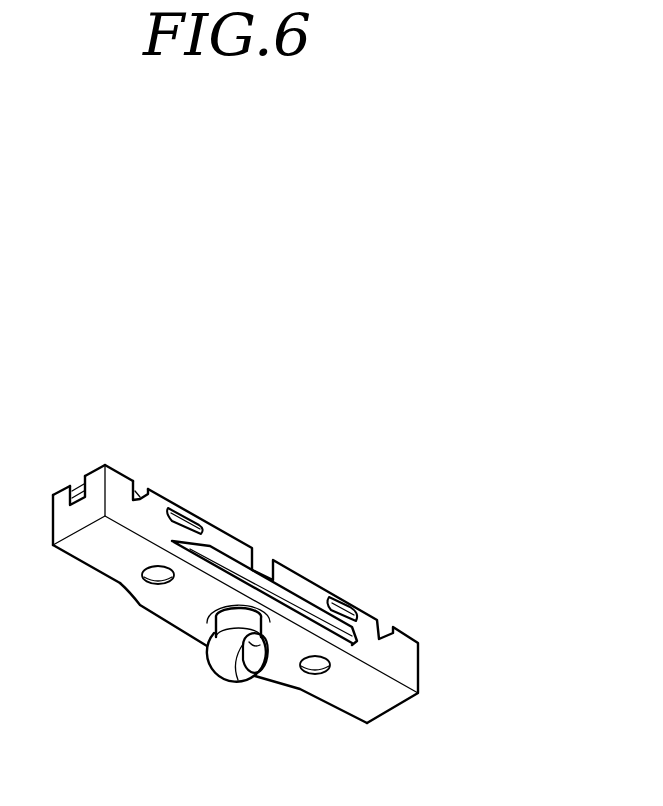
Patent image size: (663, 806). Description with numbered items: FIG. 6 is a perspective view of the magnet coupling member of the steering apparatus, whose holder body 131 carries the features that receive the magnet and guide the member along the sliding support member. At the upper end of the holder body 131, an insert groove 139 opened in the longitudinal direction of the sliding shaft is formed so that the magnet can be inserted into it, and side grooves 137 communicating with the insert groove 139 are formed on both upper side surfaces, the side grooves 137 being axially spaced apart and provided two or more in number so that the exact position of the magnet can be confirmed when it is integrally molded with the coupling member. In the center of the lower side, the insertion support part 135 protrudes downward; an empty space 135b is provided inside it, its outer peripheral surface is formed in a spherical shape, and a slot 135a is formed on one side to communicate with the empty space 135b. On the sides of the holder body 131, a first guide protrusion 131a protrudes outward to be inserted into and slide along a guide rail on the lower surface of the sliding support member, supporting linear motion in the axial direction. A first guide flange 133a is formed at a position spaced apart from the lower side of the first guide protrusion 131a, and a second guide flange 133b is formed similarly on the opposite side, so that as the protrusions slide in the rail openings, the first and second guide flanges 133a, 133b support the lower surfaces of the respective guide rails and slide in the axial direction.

The holder body 131 is at (416, 667).
The first guide protrusion 131a is at (191, 514).
The first guide flange 133a is at (330, 668).
The second guide flange 133b is at (152, 617).
The insertion support part 135 is at (215, 656).
The slot 135a is at (246, 670).
The empty space 135b is at (265, 634).
The side grooves 137 is at (140, 489).
The insert groove 139 is at (76, 488).